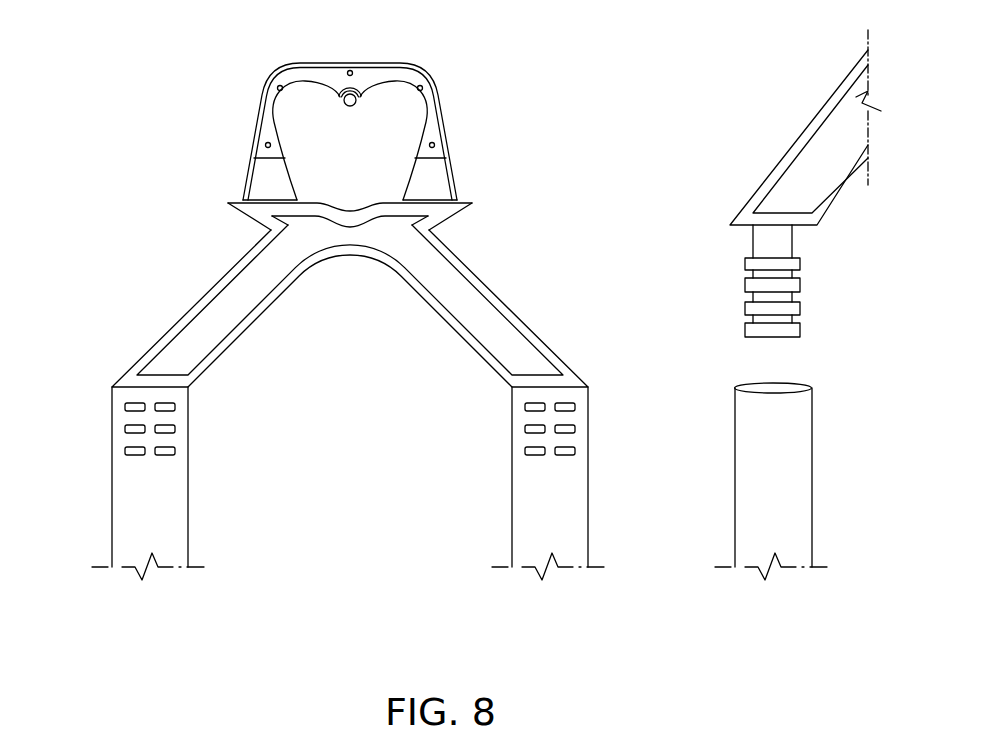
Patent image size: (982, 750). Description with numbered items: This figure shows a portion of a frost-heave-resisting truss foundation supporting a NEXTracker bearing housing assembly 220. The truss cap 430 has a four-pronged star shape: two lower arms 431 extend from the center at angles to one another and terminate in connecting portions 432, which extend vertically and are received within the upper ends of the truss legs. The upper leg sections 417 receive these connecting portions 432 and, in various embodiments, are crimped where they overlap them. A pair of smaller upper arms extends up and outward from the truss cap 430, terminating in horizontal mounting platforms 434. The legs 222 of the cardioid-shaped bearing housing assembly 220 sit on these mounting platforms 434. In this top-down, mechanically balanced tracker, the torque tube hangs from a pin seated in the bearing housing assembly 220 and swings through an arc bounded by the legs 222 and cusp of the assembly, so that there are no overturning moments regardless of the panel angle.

The bearing housing assembly 220 is at (214, 70).
The legs 222 is at (448, 168).
The truss cap 430 is at (163, 293).
The lower arms 431 is at (468, 322).
The connecting portions 432 is at (800, 308).
The mounting platforms 434 is at (457, 200).
The upper leg sections 417 is at (110, 505).